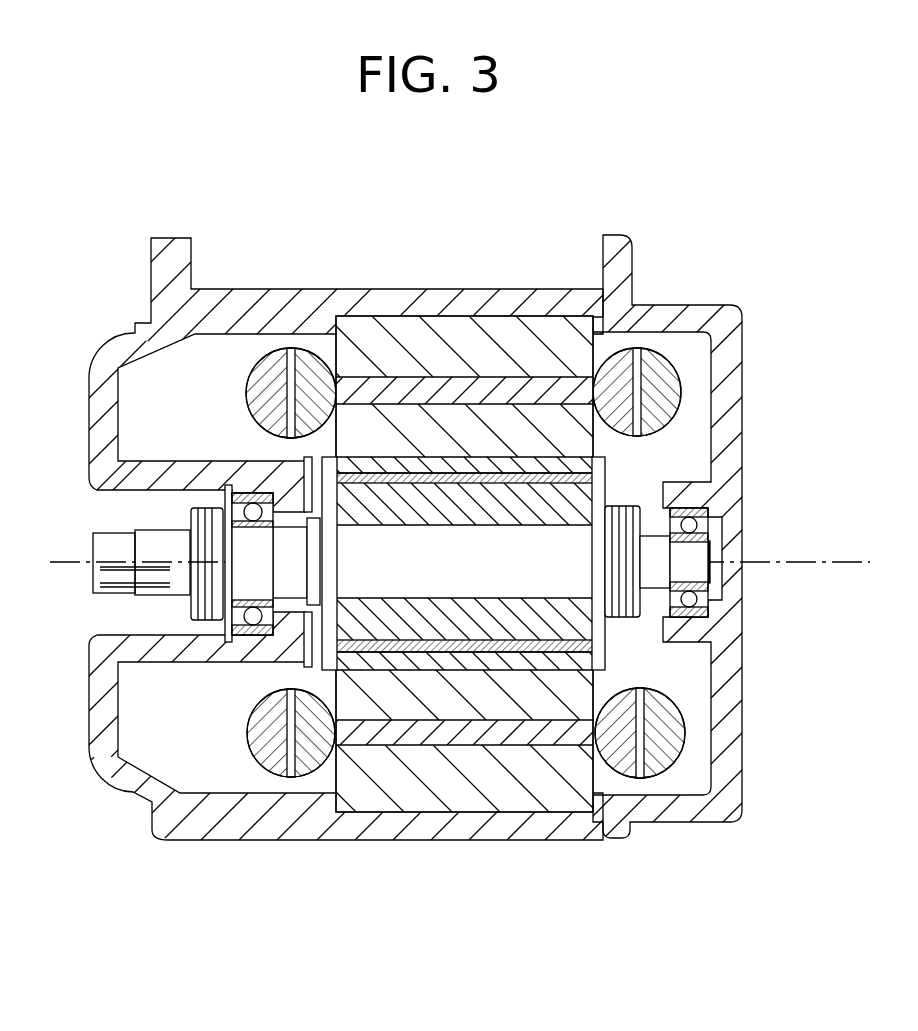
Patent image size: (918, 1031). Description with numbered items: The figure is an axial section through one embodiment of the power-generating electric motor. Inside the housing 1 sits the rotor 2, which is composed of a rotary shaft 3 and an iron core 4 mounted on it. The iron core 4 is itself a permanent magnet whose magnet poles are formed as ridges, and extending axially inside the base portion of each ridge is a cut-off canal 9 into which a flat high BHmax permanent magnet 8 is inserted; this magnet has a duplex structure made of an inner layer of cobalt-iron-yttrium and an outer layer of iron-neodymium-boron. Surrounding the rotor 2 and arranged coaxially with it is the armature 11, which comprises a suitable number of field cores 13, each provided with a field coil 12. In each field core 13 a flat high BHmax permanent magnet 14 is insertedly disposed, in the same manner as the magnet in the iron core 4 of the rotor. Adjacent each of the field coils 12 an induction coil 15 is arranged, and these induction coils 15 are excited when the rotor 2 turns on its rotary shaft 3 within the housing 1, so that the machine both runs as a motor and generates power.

The housing 1 is at (243, 270).
The rotor 2 is at (534, 550).
The rotary shaft 3 is at (113, 540).
The iron core 4 is at (460, 561).
The flat high BHmax permanent magnet 8 is at (464, 562).
The cut-off canal 9 is at (458, 563).
The armature 11 is at (481, 562).
The field coil 12 is at (458, 564).
The field core 13 is at (462, 564).
The flat high BHmax permanent magnet 14 is at (464, 561).
The induction coil 15 is at (302, 370).